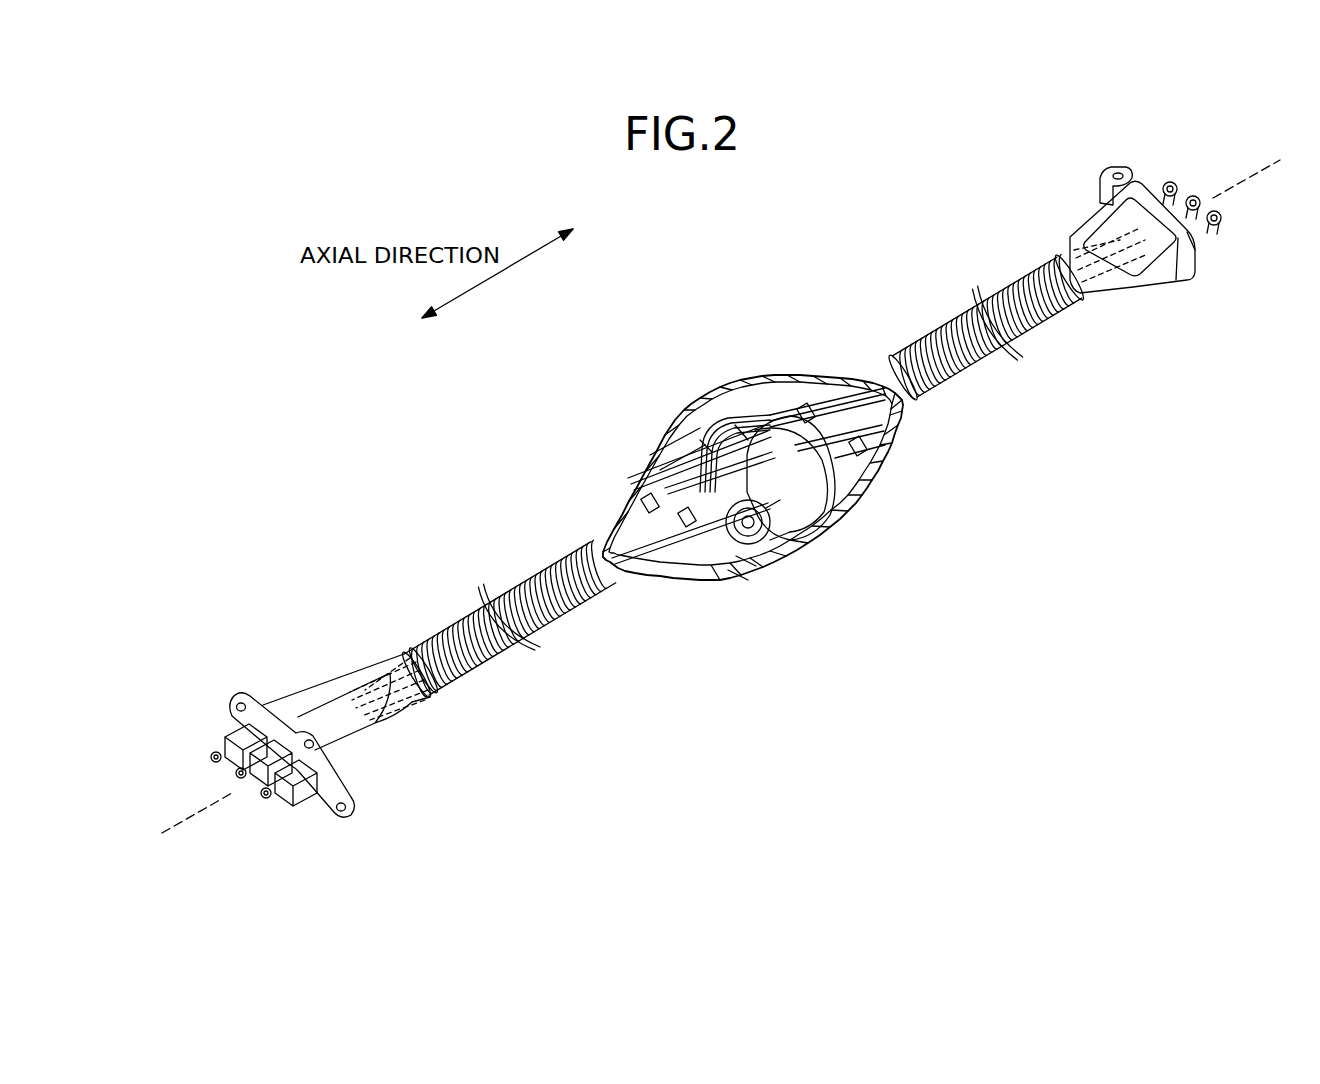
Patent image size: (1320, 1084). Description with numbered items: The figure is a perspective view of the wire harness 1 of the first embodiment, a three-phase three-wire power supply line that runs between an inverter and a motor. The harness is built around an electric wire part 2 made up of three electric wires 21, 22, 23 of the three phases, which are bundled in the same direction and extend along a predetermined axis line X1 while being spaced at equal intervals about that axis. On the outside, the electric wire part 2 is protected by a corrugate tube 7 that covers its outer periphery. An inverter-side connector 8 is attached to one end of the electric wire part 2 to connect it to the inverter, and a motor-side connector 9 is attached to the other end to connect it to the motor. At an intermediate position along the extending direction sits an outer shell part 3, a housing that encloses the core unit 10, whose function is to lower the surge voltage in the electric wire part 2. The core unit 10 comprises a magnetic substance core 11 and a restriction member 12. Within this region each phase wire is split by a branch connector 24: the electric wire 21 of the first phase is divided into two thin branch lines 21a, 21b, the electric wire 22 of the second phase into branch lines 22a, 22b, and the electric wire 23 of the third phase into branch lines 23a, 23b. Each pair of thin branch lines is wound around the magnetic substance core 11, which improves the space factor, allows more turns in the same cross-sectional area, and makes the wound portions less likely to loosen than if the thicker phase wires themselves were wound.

The wire harness 1 is at (350, 466).
The electric wire part 2 is at (378, 604).
The outer shell part (housing) 3 is at (620, 492).
The corrugate tube 7 is at (487, 679).
The inverter-side connector 8 is at (1160, 281).
The motor-side connector 9 is at (373, 757).
The core unit 10 is at (820, 552).
The magnetic substance core 11 is at (851, 492).
The restriction member 12 is at (816, 512).
The electric wire of the first phase 21 is at (398, 679).
The branch line 21a is at (656, 454).
The branch line 21b is at (680, 469).
The electric wire of the second phase 22 is at (402, 675).
The branch line 22a is at (712, 450).
The branch line 22b is at (745, 439).
The electric wire of the third phase 23 is at (406, 670).
The branch line 23a is at (740, 580).
The branch line 23b is at (742, 566).
The branch connector 24 is at (683, 512).
The axis line X1 is at (237, 797).